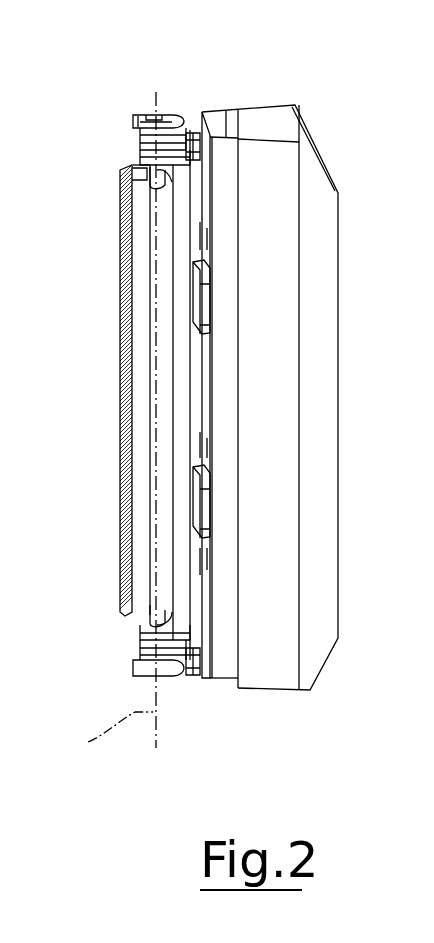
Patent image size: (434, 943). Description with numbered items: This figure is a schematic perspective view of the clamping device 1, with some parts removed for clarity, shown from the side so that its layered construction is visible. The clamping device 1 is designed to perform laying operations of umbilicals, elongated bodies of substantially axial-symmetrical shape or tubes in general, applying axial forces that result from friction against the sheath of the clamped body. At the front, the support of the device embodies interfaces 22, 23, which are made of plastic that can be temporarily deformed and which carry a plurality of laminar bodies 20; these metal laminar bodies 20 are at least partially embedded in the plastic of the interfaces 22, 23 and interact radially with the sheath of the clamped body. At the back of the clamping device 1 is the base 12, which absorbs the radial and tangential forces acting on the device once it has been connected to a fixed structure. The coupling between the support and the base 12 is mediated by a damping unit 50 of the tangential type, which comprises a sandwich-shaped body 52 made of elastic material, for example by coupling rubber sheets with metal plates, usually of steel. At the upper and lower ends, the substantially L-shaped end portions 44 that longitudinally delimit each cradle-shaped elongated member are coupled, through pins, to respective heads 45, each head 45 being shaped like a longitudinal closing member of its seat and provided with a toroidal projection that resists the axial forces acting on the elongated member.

The clamping device 1 is at (350, 66).
The base 12 is at (315, 408).
The laminar bodies 20 is at (121, 297).
The interface 22 is at (130, 160).
The interface 23 is at (165, 422).
The end portions 44 is at (190, 183).
The head 45 is at (152, 115).
The damping unit 50 is at (238, 350).
The sandwich-shaped body 52 is at (228, 283).